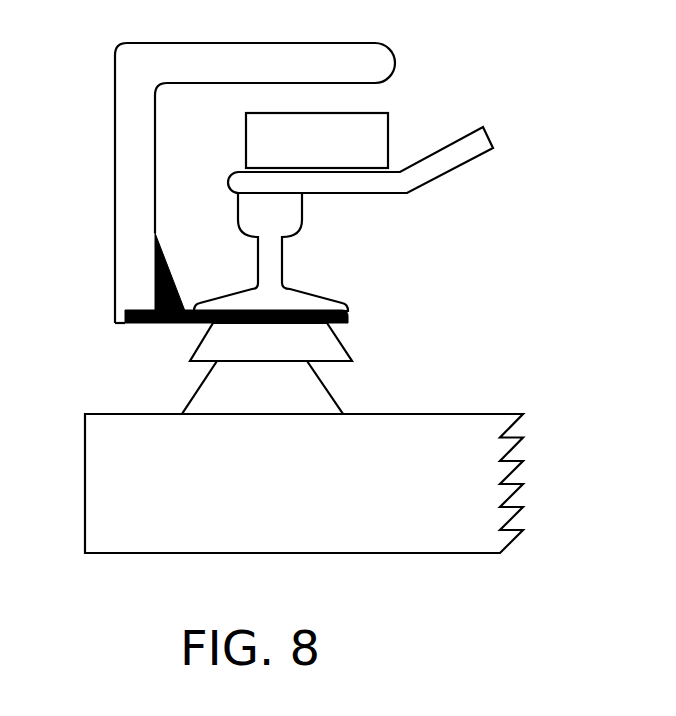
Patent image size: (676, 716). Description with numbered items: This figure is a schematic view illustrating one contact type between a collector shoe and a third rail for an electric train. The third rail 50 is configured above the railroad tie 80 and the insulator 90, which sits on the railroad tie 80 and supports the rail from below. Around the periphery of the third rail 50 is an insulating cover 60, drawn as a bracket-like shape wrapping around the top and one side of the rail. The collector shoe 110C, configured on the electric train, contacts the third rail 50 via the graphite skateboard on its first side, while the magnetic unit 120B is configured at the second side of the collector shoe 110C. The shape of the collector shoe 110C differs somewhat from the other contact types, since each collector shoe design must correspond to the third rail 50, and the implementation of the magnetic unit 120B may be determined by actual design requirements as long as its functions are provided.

The insulating cover 60 is at (395, 63).
The magnetic unit 120B is at (317, 140).
The collector shoe 110C is at (450, 173).
The third rail 50 is at (282, 257).
The insulator 90 is at (197, 388).
The railroad tie 80 is at (304, 483).